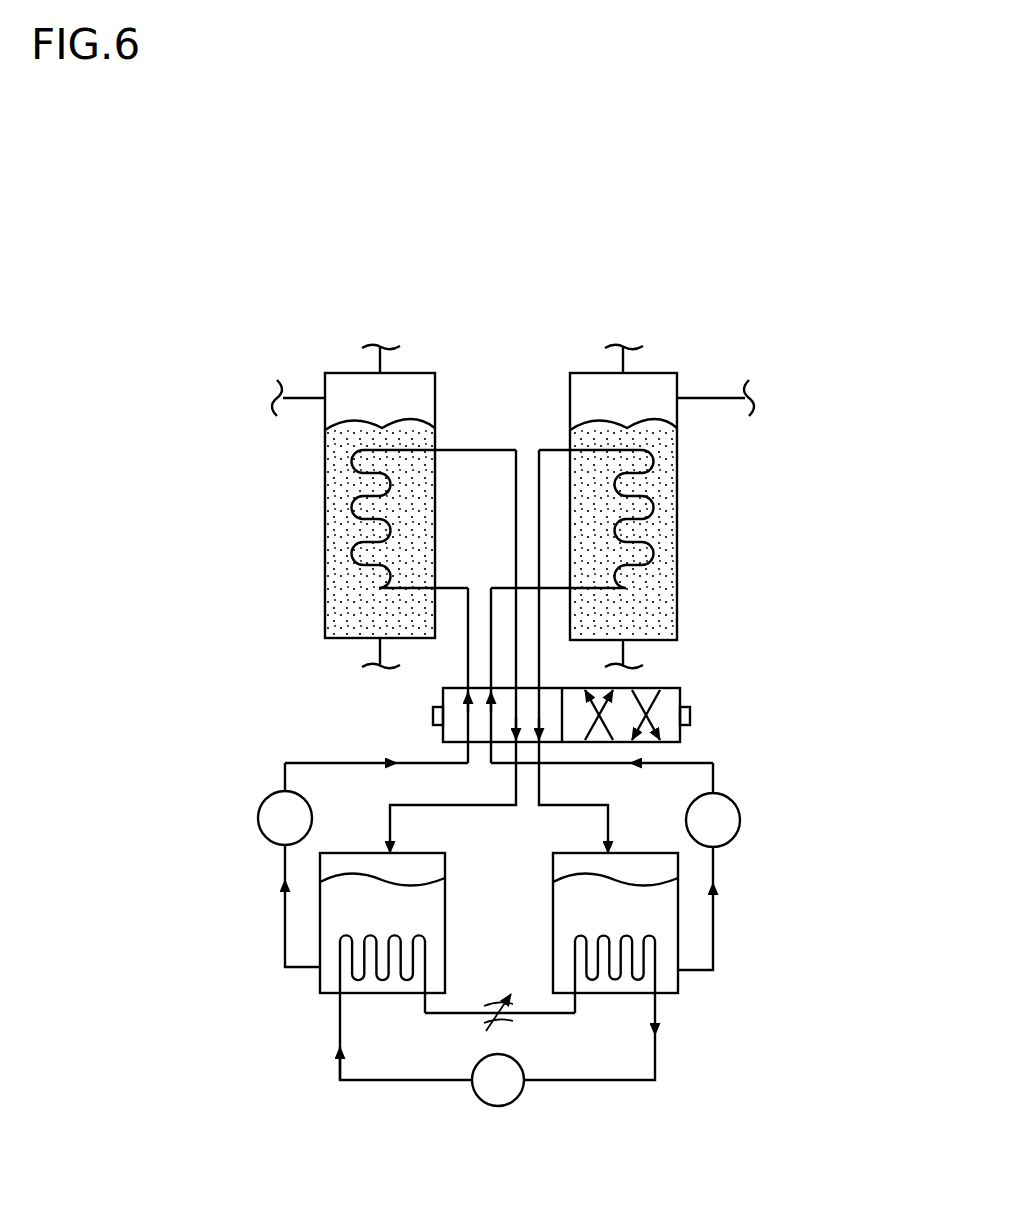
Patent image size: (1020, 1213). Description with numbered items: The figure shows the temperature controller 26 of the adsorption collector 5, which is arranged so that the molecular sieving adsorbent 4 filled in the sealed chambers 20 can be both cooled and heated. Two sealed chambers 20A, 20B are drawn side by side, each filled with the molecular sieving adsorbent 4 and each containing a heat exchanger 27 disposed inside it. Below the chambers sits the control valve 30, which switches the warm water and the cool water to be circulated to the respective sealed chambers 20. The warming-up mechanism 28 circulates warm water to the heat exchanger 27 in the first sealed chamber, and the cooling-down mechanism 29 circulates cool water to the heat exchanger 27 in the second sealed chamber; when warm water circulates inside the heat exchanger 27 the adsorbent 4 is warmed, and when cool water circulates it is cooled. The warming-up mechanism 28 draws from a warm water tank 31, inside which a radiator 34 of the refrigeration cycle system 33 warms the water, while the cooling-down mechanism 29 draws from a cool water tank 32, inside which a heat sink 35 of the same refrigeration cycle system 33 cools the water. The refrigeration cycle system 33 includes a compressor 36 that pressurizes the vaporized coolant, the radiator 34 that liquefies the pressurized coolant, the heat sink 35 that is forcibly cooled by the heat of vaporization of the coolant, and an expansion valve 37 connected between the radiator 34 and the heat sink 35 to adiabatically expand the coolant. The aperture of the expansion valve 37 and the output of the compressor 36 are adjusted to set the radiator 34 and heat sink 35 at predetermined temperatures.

The adsorption collector 5 is at (738, 330).
The sealed chamber 20 is at (570, 281).
The first heat storage unit 20A is at (597, 373).
The second heat storage unit 20B is at (420, 373).
The molecular sieving adsorbent 4 is at (330, 467).
The heat exchanger 27 is at (345, 512).
The temperature controller 26 is at (772, 742).
The control valve 30 is at (668, 688).
The warming-up mechanism 28 is at (243, 950).
The cooling-down mechanism 29 is at (762, 922).
The warm water tank 31 is at (350, 875).
The cool water tank 32 is at (643, 875).
The refrigeration cycle system 33 is at (647, 1132).
The radiator 34 is at (330, 993).
The heat sink 35 is at (660, 985).
The compressor 36 is at (487, 1103).
The expansion valve 37 is at (490, 1005).